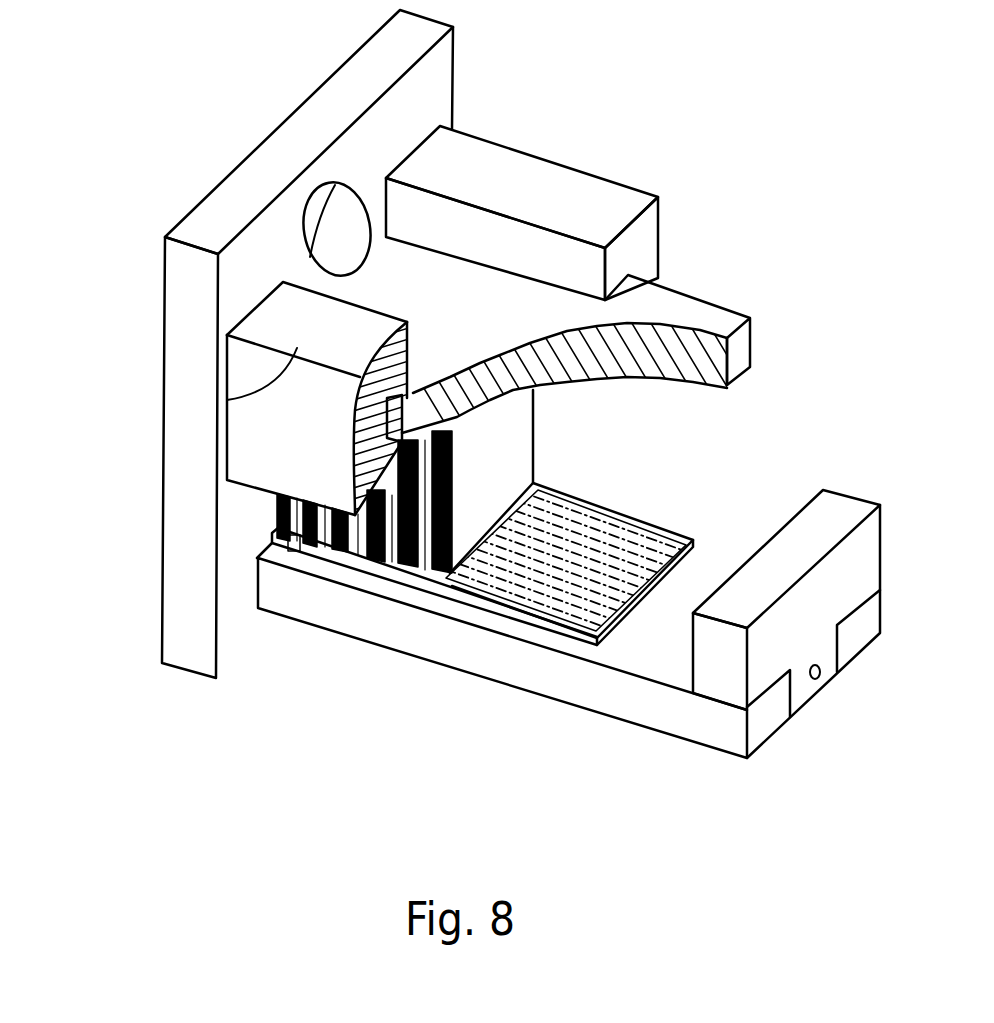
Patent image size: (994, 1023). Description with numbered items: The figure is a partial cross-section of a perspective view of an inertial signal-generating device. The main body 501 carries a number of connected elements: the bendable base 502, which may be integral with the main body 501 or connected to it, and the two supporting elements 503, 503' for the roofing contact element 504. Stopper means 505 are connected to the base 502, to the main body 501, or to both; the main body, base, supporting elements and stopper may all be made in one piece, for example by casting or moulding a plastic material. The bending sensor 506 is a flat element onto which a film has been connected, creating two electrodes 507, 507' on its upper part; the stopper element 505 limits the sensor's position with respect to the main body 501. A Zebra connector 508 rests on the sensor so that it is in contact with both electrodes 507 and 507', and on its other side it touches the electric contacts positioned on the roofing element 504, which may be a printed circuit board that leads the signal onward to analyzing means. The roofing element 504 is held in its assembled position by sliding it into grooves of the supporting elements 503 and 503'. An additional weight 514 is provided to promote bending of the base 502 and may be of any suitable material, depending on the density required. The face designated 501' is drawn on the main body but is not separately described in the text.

The main body 501 is at (471, 400).
The support plate 501' is at (251, 344).
The bendable base 502 is at (515, 662).
The supporting element 503 is at (543, 205).
The supporting element 503' is at (230, 402).
The roofing contact element 504 is at (700, 308).
The stopper means 505 is at (277, 615).
The bending sensor 506 is at (602, 537).
The electrode 507 is at (312, 627).
The electrode 507' is at (405, 594).
The Zebra connector 508 is at (513, 428).
The additional weight 514 is at (837, 502).